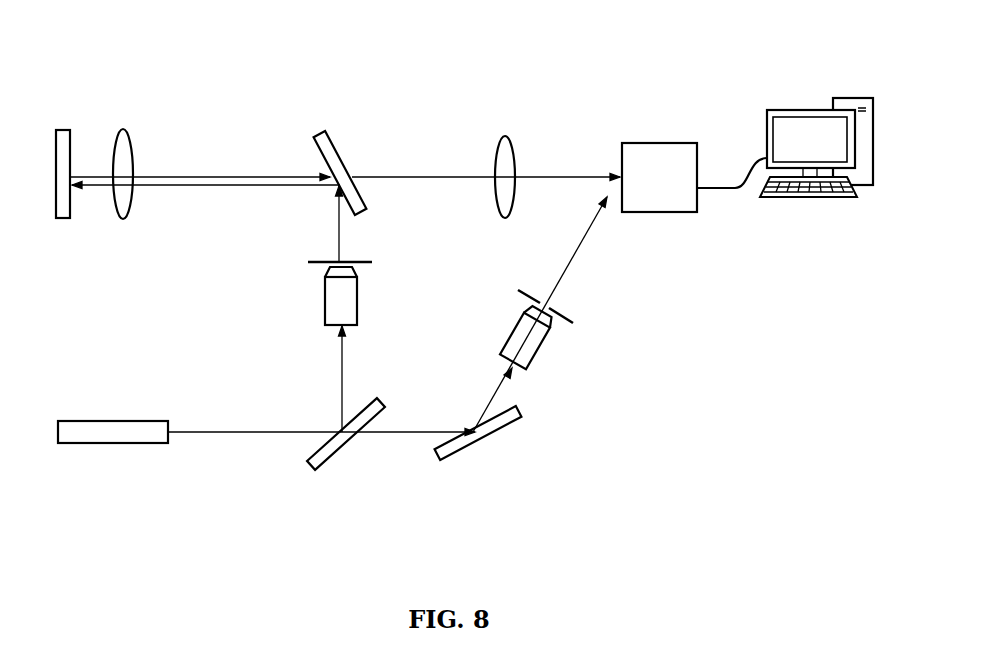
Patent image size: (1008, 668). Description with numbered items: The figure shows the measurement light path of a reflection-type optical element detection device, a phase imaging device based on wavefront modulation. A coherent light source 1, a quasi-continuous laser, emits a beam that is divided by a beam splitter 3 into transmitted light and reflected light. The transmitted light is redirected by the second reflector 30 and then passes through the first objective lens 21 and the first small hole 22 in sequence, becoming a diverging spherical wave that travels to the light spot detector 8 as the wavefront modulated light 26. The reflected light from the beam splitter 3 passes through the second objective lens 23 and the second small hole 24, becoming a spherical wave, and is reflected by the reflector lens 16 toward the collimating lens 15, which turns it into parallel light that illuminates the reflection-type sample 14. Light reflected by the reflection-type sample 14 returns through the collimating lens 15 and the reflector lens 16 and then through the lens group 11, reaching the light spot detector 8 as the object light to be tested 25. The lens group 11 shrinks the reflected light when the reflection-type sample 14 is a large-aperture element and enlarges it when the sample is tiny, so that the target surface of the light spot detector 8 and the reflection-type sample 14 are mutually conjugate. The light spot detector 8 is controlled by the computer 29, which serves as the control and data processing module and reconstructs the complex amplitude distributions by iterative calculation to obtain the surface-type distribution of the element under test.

The coherent light source 1 is at (118, 433).
The beam splitter 3 is at (342, 443).
The light spot detector 8 is at (688, 158).
The lens group 11 is at (508, 135).
The reflection-type sample 14 is at (67, 127).
The collimating lens 15 is at (125, 129).
The reflector lens 16 is at (323, 130).
The first objective lens 21 is at (540, 355).
The first small hole 22 is at (573, 323).
The second objective lens 23 is at (320, 307).
The second small hole 24 is at (312, 265).
The object light to be tested 25 is at (577, 175).
The wavefront modulated light 26 is at (583, 258).
The computer 29 is at (800, 110).
The second reflector 30 is at (490, 438).